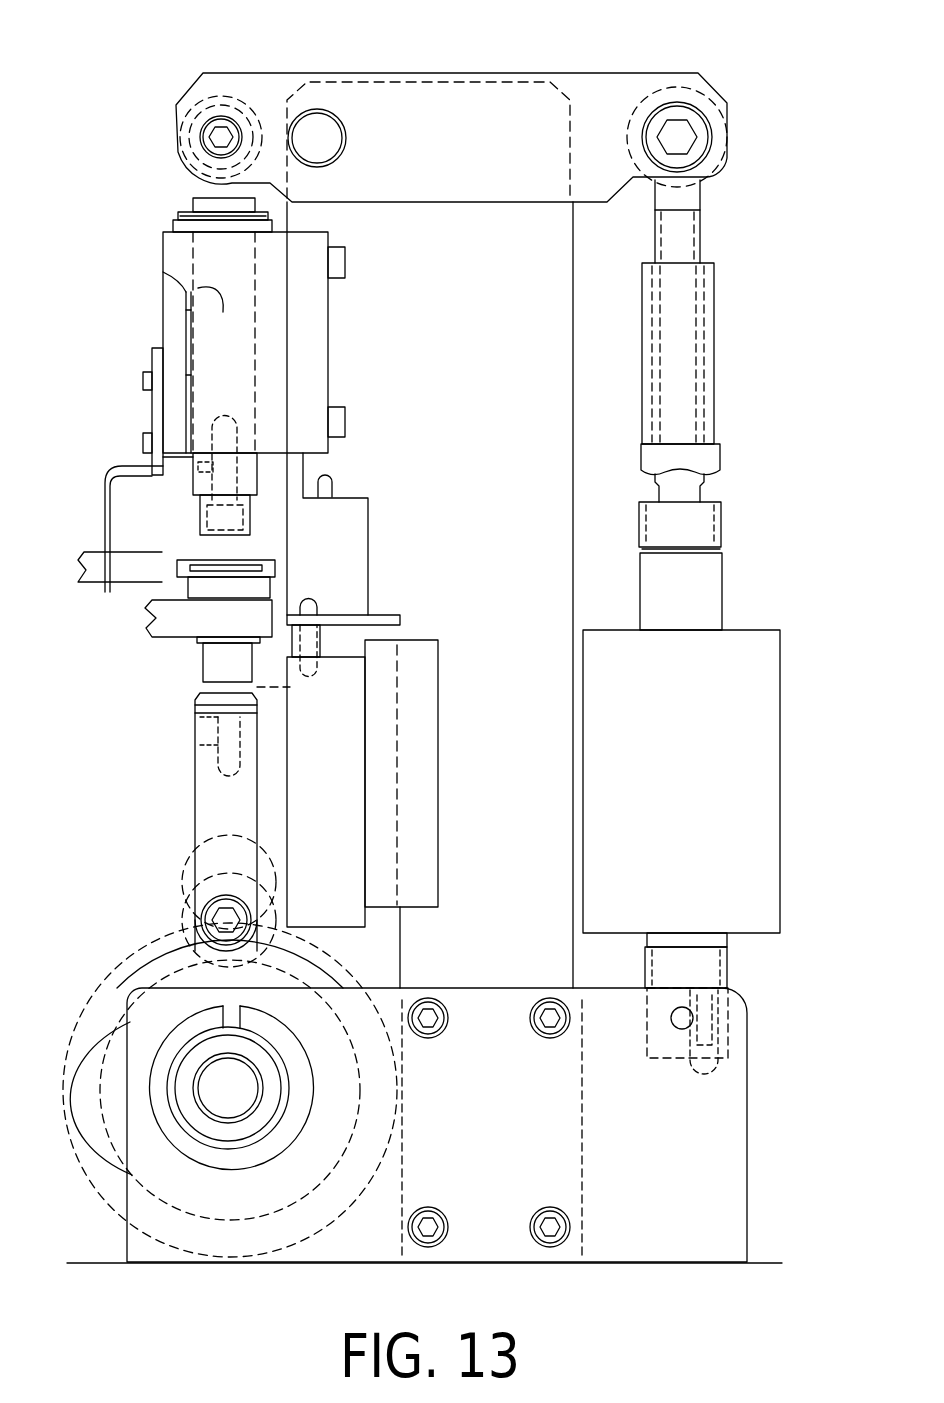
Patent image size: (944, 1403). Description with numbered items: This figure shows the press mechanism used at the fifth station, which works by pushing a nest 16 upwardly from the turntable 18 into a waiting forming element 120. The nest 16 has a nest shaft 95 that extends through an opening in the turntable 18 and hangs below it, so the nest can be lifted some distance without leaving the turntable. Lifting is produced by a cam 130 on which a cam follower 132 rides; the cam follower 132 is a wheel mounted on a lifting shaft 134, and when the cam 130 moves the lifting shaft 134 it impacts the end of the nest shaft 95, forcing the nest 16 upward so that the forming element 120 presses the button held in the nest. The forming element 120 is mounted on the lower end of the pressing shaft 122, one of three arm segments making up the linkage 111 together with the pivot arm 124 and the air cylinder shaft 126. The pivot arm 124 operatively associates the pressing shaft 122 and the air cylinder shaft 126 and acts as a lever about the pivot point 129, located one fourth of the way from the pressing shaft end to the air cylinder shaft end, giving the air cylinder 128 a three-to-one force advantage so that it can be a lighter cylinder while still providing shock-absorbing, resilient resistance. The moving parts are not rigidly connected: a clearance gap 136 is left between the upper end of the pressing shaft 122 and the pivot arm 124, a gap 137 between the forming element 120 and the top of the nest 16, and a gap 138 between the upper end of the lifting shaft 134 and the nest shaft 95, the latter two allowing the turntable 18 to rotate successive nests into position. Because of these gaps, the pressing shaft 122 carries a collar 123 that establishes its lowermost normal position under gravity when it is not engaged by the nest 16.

The linkage 111 is at (522, 58).
The pivot arm 124 is at (488, 132).
The pivot point 129 is at (318, 150).
The clearance gap 136 is at (207, 188).
The pressing shaft 122 is at (197, 204).
The collar 123 is at (180, 215).
The forming element 120 is at (250, 520).
The gap 137 is at (207, 546).
The nest 16 is at (262, 598).
The turntable 18 is at (177, 617).
The nest shaft 95 is at (205, 662).
The lifting shaft 134 is at (215, 787).
The gap 138 is at (188, 689).
The cam follower 132 is at (190, 920).
The cam 130 is at (103, 1073).
The air cylinder shaft 126 is at (695, 237).
The air cylinder 128 is at (688, 800).